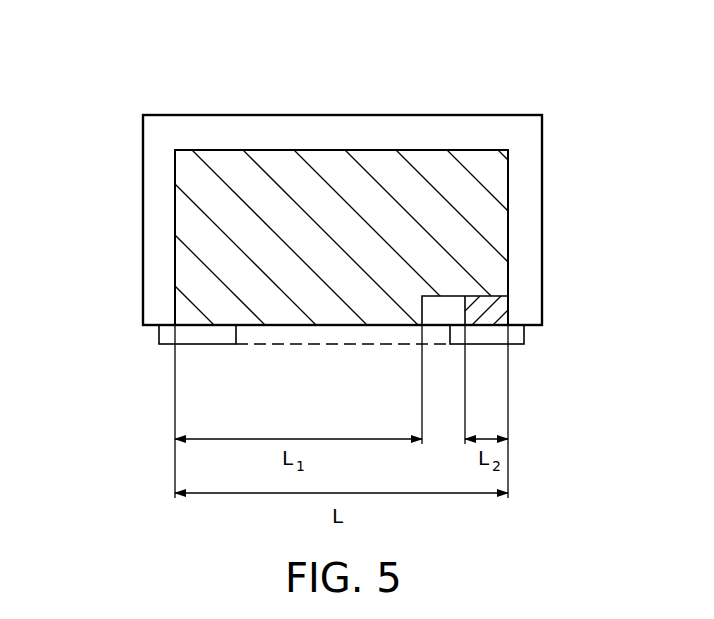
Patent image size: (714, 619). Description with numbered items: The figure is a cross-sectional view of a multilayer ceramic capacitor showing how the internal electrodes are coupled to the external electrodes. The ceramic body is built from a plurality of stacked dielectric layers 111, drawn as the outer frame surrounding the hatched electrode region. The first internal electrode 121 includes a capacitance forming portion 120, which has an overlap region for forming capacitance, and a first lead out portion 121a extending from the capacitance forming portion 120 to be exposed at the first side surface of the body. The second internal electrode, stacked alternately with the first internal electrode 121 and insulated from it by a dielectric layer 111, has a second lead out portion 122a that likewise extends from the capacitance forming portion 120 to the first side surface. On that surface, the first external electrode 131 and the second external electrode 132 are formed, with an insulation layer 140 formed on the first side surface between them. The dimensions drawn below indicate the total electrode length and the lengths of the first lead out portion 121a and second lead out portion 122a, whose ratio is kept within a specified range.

The dielectric layer 111 is at (346, 128).
The capacitance forming portion 120 is at (512, 228).
The first internal electrode 121 is at (193, 215).
The first lead out portion 121a is at (190, 308).
The second lead out portion 122a is at (495, 309).
The first external electrode 131 is at (195, 336).
The second external electrode 132 is at (483, 336).
The insulation layer 140 is at (332, 346).